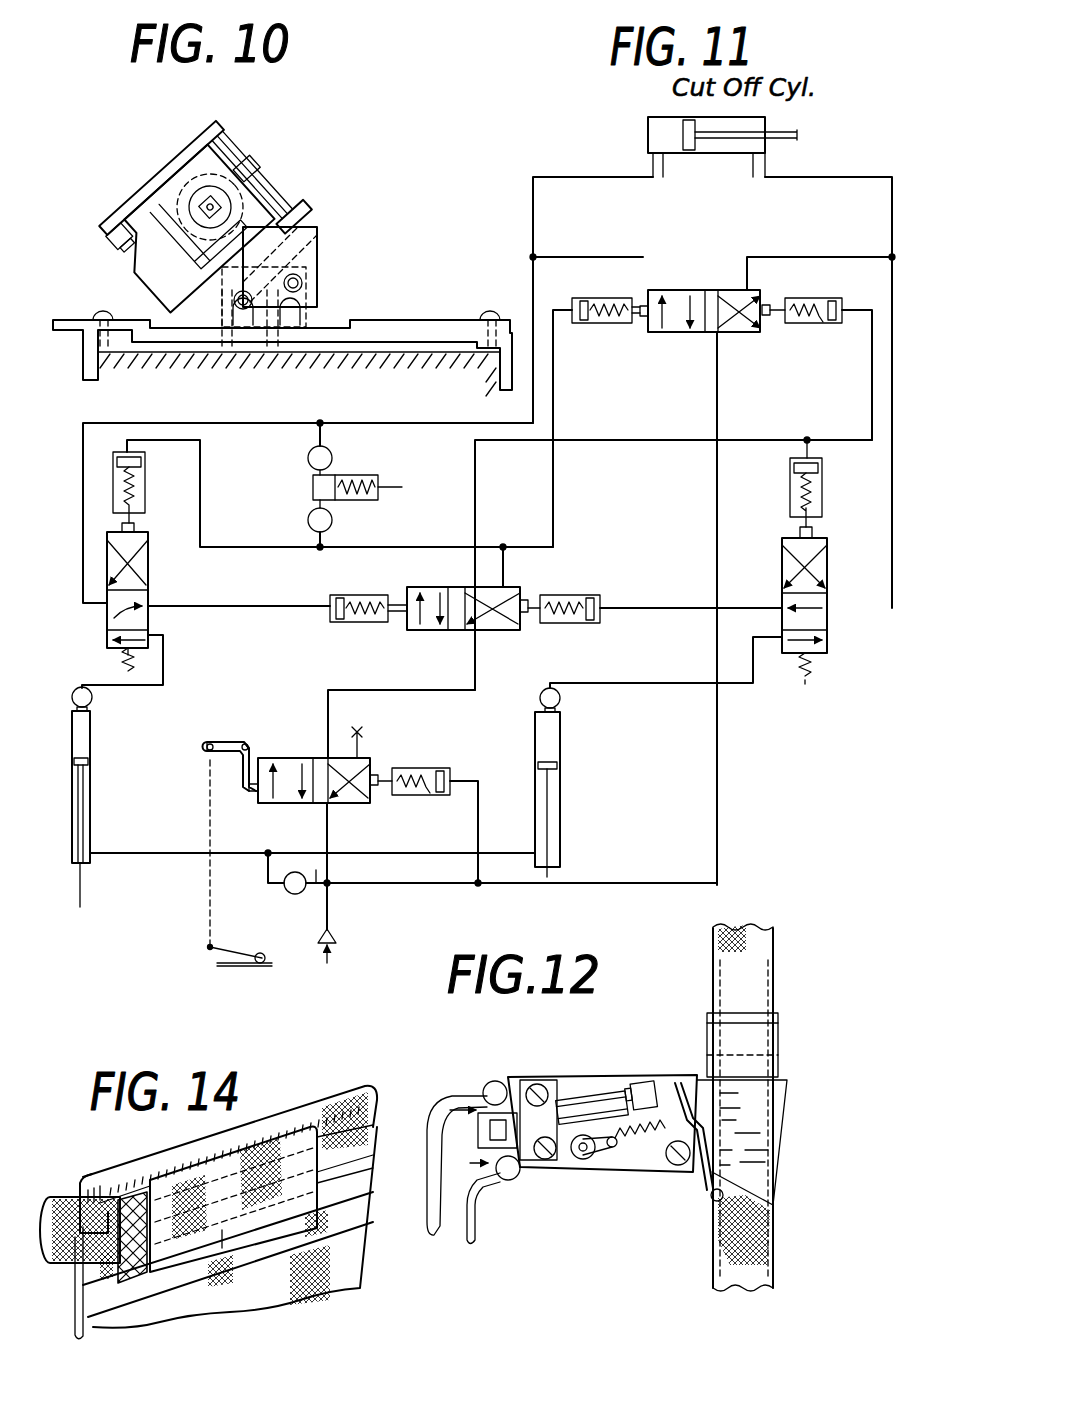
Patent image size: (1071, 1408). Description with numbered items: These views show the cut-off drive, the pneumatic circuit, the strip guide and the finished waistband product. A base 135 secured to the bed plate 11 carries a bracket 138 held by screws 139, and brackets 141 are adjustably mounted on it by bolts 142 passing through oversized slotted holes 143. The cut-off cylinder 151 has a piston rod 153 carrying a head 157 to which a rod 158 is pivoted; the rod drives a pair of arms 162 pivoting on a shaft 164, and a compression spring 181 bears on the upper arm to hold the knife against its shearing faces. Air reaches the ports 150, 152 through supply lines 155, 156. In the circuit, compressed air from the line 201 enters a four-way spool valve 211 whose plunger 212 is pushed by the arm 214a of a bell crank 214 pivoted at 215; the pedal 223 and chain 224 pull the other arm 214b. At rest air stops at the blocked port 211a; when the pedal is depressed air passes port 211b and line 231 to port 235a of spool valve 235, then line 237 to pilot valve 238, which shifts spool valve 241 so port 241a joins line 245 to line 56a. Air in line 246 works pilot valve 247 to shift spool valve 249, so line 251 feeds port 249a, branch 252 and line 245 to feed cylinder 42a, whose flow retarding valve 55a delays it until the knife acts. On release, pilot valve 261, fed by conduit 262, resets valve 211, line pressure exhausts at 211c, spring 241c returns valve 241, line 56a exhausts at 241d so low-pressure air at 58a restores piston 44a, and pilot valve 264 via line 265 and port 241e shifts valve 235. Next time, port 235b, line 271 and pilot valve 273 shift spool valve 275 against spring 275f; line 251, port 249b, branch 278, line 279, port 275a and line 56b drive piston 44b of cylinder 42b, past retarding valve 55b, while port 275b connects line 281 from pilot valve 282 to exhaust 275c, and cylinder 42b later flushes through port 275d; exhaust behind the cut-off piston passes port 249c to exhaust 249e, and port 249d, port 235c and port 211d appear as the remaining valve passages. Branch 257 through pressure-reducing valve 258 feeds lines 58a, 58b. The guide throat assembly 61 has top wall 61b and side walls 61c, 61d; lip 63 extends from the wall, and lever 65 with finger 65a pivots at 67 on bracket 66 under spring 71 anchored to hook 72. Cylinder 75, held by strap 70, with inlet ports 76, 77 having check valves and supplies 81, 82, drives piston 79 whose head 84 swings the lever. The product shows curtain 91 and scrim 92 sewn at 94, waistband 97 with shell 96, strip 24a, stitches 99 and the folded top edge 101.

In FIG. 10, the base 11 is at (150, 362).
In FIG. 10, the base 135 is at (388, 318).
In FIG. 10, the bracket 138 is at (310, 320).
In FIG. 10, the screws 139 is at (245, 327).
In FIG. 10, the brackets 141 is at (318, 228).
In FIG. 10, the bolts 142 is at (250, 294).
In FIG. 10, the slotted holes 143 is at (290, 322).
In FIG. 10, the pneumatic cylinder 151 is at (176, 196).
In FIG. 11, the pneumatic cylinder 151 is at (646, 120).
In FIG. 10, the head 157 is at (224, 205).
In FIG. 10, the rod 158 is at (258, 182).
In FIG. 10, the arms 162 is at (178, 156).
In FIG. 10, the shaft 164 is at (116, 220).
In FIG. 10, the compression spring 181 is at (118, 238).
In FIG. 11, the port 150 is at (653, 168).
In FIG. 11, the port 152 is at (760, 165).
In FIG. 11, the piston rod 153 is at (785, 132).
In FIG. 11, the air supply line 155 is at (534, 210).
In FIG. 11, the air supply line 156 is at (800, 177).
In FIG. 11, the line 201 is at (332, 955).
In FIG. 11, the 4-way spool valve 211 is at (310, 757).
In FIG. 11, the blocked port 211a is at (365, 735).
In FIG. 11, the port 211b is at (277, 805).
In FIG. 11, the exhaust 211c is at (350, 805).
In FIG. 11, the passage 211d is at (335, 758).
In FIG. 11, the plunger 212 is at (252, 792).
In FIG. 11, the bell crank 214 is at (244, 742).
In FIG. 11, the arm 214a is at (240, 775).
In FIG. 11, the arm 214b is at (208, 742).
In FIG. 11, the pivot 215 is at (250, 744).
In FIG. 11, the pedal 223 is at (230, 948).
In FIG. 11, the chain 224 is at (208, 905).
In FIG. 11, the line 231 is at (420, 700).
In FIG. 11, the 4-way spool valve 235 is at (440, 585).
In FIG. 11, the port 235a is at (500, 587).
In FIG. 11, the port 235b is at (428, 632).
In FIG. 11, the passage 235c is at (445, 632).
In FIG. 11, the line 237 is at (340, 548).
In FIG. 11, the pilot valve 238 is at (145, 510).
In FIG. 11, the 4-way spool valve 241 is at (150, 594).
In FIG. 11, the port 241a is at (108, 572).
In FIG. 11, the spring 241c is at (122, 658).
In FIG. 11, the exhaust 241d is at (104, 640).
In FIG. 11, the port 241e is at (140, 615).
In FIG. 11, the line 245 is at (83, 478).
In FIG. 11, the line 246 is at (554, 492).
In FIG. 11, the pilot valve 247 is at (612, 288).
In FIG. 11, the 4-way spool valve 249 is at (690, 334).
In FIG. 11, the port 249a is at (648, 332).
In FIG. 11, the port 249b is at (733, 333).
In FIG. 11, the port 249c is at (730, 290).
In FIG. 11, the passage 249d is at (688, 305).
In FIG. 11, the exhaust 249e is at (752, 333).
In FIG. 11, the line 251 is at (716, 540).
In FIG. 11, the branch 252 is at (643, 257).
In FIG. 11, the branch 257 is at (312, 895).
In FIG. 11, the pressure-reducing valve 258 is at (284, 890).
In FIG. 11, the pilot valve 261 is at (430, 768).
In FIG. 11, the conduit 262 is at (478, 815).
In FIG. 11, the pilot valve 264 is at (358, 623).
In FIG. 11, the line 265 is at (238, 607).
In FIG. 11, the line 271 is at (476, 500).
In FIG. 11, the pilot valve 273 is at (792, 495).
In FIG. 11, the 4-way spool valve 275 is at (829, 583).
In FIG. 11, the port 275a is at (815, 552).
In FIG. 11, the port 275b is at (792, 555).
In FIG. 11, the exhaust 275c is at (835, 645).
In FIG. 11, the port 275d is at (790, 642).
In FIG. 11, the spring 275f is at (805, 683).
In FIG. 11, the branch 278 is at (785, 257).
In FIG. 11, the line 279 is at (872, 385).
In FIG. 11, the line 281 is at (640, 610).
In FIG. 11, the pilot valve 282 is at (585, 595).
In FIG. 11, the feed cylinder 42a is at (90, 795).
In FIG. 11, the feed cylinder 42b is at (561, 790).
In FIG. 11, the piston 44a is at (82, 822).
In FIG. 11, the piston 44b is at (548, 822).
In FIG. 11, the flow retarding valve 55a is at (73, 695).
In FIG. 11, the flow retarding valve 55b is at (561, 700).
In FIG. 11, the line 56a is at (110, 686).
In FIG. 11, the line 56b is at (660, 684).
In FIG. 11, the line 58a is at (128, 855).
In FIG. 11, the line 58b is at (445, 866).
In FIG. 11, the cylinder 75 is at (355, 476).
In FIG. 12, the cylinder 75 is at (588, 1100).
In FIG. 11, the inlet port 76 is at (333, 452).
In FIG. 12, the inlet port 76 is at (487, 1085).
In FIG. 11, the inlet port 77 is at (333, 524).
In FIG. 12, the inlet port 77 is at (510, 1180).
In FIG. 11, the supply line 81 is at (318, 440).
In FIG. 12, the supply line 81 is at (430, 1240).
In FIG. 11, the supply line 82 is at (318, 545).
In FIG. 12, the supply line 82 is at (470, 1250).
In FIG. 12, the guide throat assembly 61 is at (790, 1143).
In FIG. 12, the top wall 61b is at (744, 1129).
In FIG. 12, the side wall 61c is at (788, 1095).
In FIG. 12, the side wall 61d is at (690, 1078).
In FIG. 12, the lip 63 is at (775, 1188).
In FIG. 12, the lever 65 is at (700, 1175).
In FIG. 12, the finger 65a is at (714, 1200).
In FIG. 12, the bracket 66 is at (628, 1172).
In FIG. 12, the pivot 67 is at (670, 1165).
In FIG. 12, the strap 70 is at (548, 1105).
In FIG. 12, the spring 71 is at (615, 1145).
In FIG. 12, the fixed hook 72 is at (583, 1160).
In FIG. 12, the piston 79 is at (630, 1092).
In FIG. 12, the head 84 is at (648, 1090).
In FIG. 14, the strip 24a is at (50, 1212).
In FIG. 14, the curtain 91 is at (173, 1272).
In FIG. 14, the strip of scrim or canvas 92 is at (75, 1298).
In FIG. 14, the sewn line 94 is at (225, 1245).
In FIG. 14, the shell cloth 96 is at (347, 1283).
In FIG. 14, the shell cloth waistband 97 is at (118, 1265).
In FIG. 14, the line of stitches 99 is at (92, 1178).
In FIG. 14, the top edge 101 is at (157, 1172).